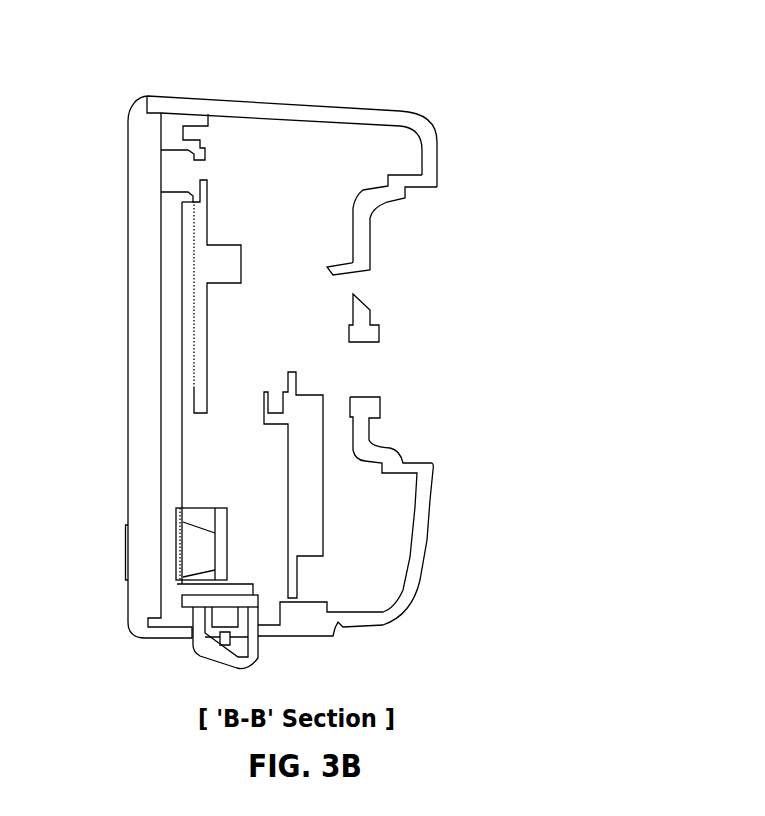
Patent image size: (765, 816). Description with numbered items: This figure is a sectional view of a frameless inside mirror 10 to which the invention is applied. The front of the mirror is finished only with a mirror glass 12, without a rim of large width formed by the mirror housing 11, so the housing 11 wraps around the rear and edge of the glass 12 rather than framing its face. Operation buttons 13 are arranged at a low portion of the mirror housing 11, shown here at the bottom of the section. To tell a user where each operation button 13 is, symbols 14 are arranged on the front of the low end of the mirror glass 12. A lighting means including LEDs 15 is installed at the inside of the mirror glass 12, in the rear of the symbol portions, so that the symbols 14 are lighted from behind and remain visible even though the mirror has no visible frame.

The inside mirror 10 is at (486, 155).
The mirror housing 11 is at (287, 104).
The mirror glass 12 is at (128, 264).
The operation buttons 13 is at (218, 643).
The symbols 14 is at (126, 548).
The LEDs 15 is at (194, 543).